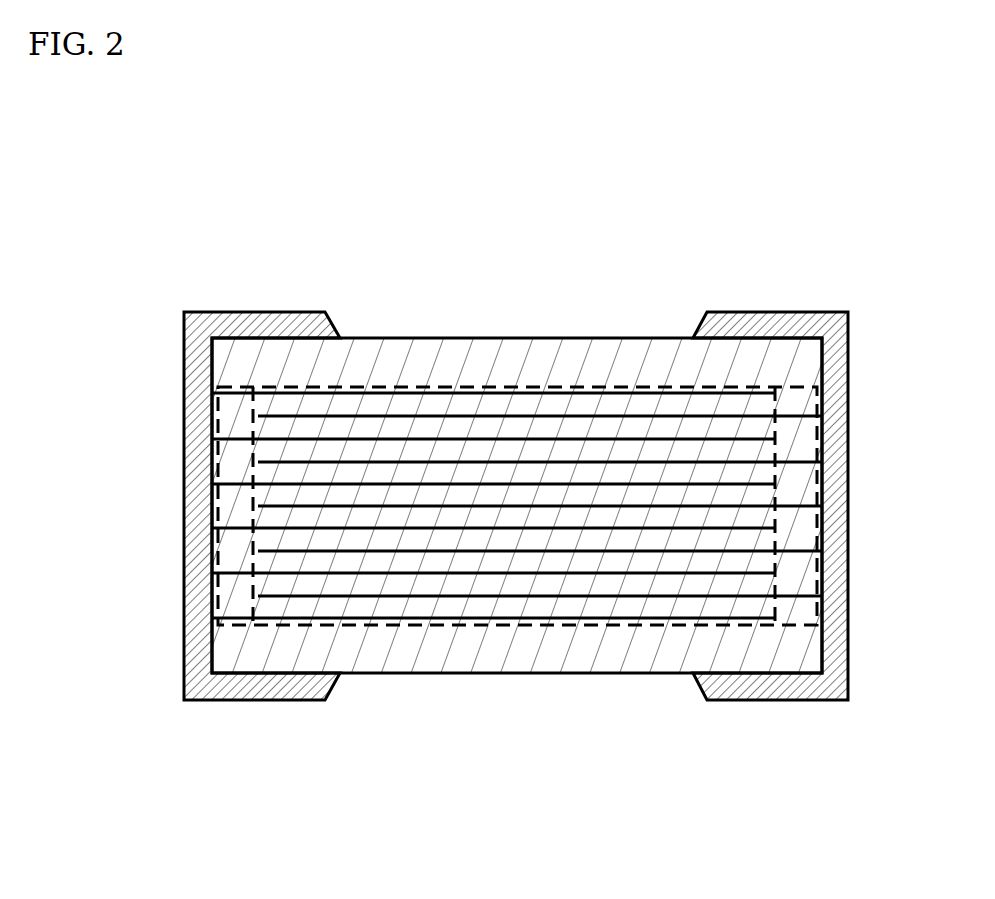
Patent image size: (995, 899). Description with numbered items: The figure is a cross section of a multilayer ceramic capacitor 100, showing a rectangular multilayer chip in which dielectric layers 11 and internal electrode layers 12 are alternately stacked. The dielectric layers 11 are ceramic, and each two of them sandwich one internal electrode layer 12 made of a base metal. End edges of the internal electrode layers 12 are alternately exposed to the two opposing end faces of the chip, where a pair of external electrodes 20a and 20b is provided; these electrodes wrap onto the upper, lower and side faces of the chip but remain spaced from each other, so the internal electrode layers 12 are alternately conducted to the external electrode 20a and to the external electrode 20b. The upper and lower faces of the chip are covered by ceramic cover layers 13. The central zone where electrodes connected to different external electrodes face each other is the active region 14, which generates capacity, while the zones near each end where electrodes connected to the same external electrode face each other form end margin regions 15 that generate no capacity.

The multilayer ceramic capacitor 100 is at (510, 451).
The external electrode 20a is at (210, 312).
The external electrode 20b is at (812, 312).
The cover layer 13 is at (409, 350).
The active region 14 is at (540, 385).
The end margin region 15 is at (237, 387).
The internal electrode layer 12 is at (505, 553).
The dielectric layer 11 is at (640, 580).